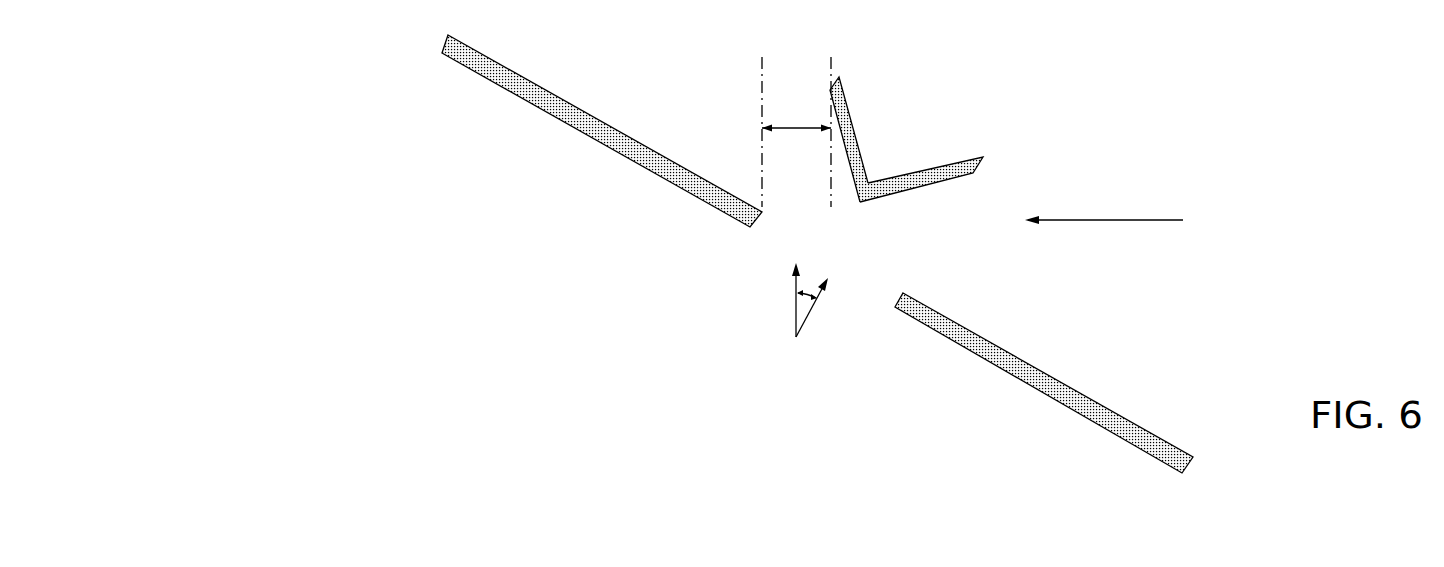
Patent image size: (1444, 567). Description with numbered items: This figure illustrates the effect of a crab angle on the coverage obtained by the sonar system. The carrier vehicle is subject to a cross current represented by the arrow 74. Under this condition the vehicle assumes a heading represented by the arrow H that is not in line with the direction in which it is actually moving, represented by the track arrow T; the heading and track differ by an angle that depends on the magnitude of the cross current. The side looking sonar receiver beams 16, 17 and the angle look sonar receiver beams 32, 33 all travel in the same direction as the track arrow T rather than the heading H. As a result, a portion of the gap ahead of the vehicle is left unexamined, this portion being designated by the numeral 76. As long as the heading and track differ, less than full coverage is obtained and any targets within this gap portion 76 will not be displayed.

The port receiver beam 17 is at (613, 127).
The starboard receiver beam 16 is at (1000, 346).
The port receiver beam 33 is at (853, 132).
The starboard receiver beam 32 is at (968, 158).
The unexamined portion of the gap 76 is at (796, 127).
The cross current arrow 74 is at (1138, 219).
The track arrow T is at (795, 303).
The heading arrow H is at (811, 310).